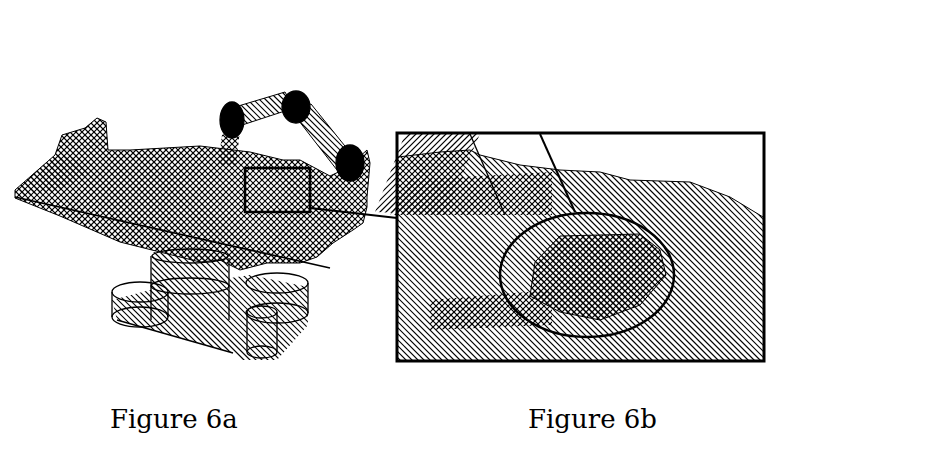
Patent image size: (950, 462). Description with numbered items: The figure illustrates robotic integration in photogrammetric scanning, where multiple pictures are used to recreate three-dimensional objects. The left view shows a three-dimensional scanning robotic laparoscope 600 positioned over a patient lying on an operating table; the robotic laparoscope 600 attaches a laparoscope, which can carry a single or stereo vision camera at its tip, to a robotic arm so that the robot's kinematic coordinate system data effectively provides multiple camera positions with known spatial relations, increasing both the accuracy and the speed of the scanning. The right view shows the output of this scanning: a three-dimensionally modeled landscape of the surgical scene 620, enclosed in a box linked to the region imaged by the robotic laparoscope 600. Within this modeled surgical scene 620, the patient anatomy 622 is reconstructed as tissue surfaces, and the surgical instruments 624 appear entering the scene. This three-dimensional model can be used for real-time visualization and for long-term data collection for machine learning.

In FIG. 6A, the 3D scanning robotic laparoscope 600 is at (318, 126).
In FIG. 6B, the surgical scene 620 is at (703, 131).
In FIG. 6A, the patient anatomy 622 is at (257, 118).
In FIG. 6B, the patient anatomy 622 is at (730, 193).
In FIG. 6A, the surgical instruments 624 is at (247, 102).
In FIG. 6B, the surgical instruments 624 is at (500, 173).